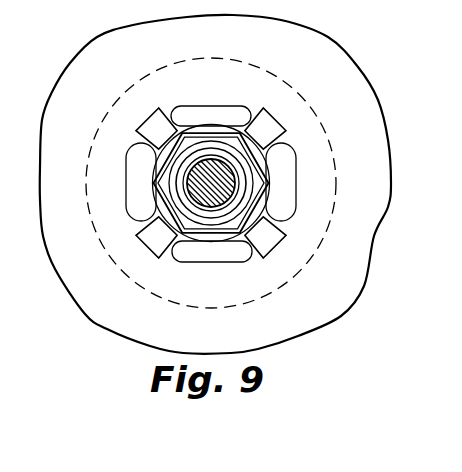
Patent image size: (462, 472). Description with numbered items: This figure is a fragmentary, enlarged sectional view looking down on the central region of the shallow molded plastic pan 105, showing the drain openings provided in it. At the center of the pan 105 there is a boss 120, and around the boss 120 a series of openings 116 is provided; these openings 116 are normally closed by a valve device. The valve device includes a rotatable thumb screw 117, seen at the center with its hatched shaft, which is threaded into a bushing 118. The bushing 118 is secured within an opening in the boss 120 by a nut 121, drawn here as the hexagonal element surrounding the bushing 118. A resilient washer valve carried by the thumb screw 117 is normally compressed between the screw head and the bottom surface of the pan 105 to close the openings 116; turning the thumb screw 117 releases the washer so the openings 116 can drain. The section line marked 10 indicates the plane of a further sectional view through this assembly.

The section line 10- 10 is at (203, 172).
The pan 105 is at (360, 226).
The openings 116 is at (286, 160).
The thumb screw 117 is at (208, 200).
The bushing 118 is at (210, 146).
The boss 120 is at (140, 158).
The nut 121 is at (196, 138).